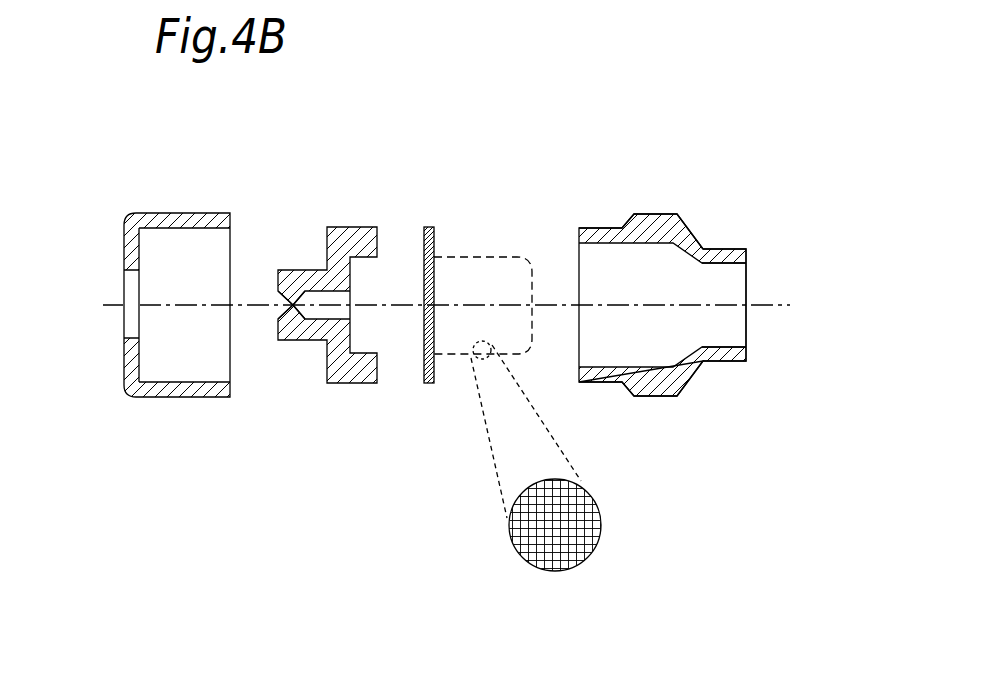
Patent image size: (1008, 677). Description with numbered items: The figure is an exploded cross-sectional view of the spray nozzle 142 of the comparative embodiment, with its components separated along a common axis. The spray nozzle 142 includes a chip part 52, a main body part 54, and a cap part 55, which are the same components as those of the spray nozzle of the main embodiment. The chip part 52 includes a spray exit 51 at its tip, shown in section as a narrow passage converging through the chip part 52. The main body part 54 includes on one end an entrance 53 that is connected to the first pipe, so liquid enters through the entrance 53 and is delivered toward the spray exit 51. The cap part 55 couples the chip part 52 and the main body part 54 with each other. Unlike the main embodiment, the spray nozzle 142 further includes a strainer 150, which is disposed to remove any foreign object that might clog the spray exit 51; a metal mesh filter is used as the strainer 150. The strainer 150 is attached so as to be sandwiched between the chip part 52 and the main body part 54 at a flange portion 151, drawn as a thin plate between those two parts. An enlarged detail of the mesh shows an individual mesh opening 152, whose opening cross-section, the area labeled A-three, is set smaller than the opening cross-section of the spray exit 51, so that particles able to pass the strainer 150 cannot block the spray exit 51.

The spray nozzle 142 is at (706, 190).
The strainer 150 is at (486, 256).
The flange portion 151 is at (434, 238).
The mesh opening 152 is at (541, 543).
The spray exit 51 is at (281, 306).
The chip part 52 is at (347, 383).
The entrance 53 is at (748, 296).
The main body part 54 is at (657, 397).
The cap part 55 is at (182, 397).